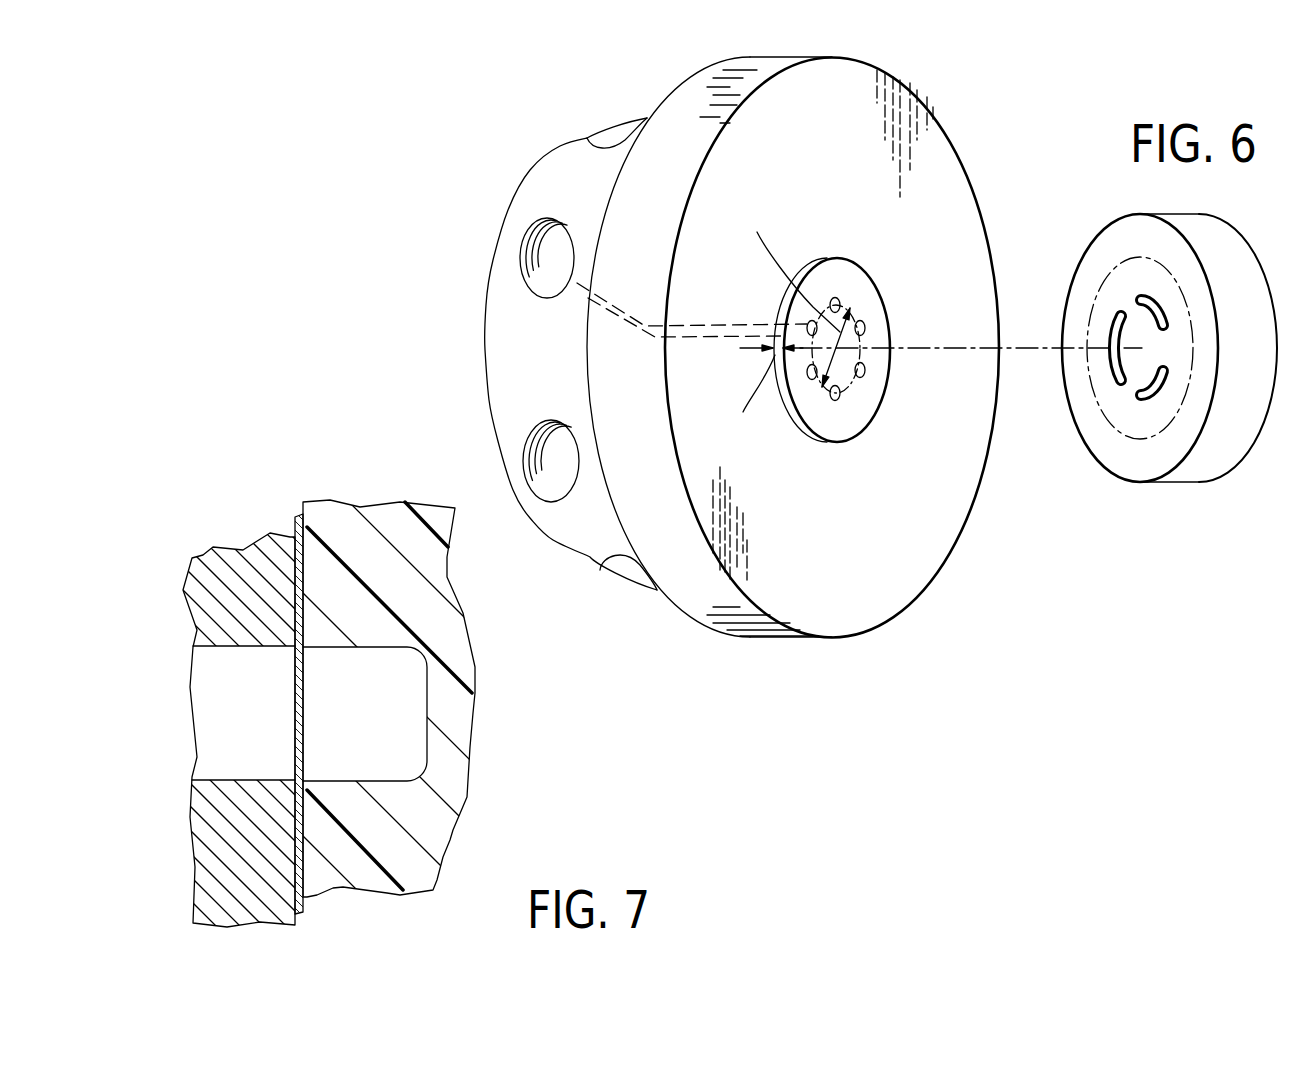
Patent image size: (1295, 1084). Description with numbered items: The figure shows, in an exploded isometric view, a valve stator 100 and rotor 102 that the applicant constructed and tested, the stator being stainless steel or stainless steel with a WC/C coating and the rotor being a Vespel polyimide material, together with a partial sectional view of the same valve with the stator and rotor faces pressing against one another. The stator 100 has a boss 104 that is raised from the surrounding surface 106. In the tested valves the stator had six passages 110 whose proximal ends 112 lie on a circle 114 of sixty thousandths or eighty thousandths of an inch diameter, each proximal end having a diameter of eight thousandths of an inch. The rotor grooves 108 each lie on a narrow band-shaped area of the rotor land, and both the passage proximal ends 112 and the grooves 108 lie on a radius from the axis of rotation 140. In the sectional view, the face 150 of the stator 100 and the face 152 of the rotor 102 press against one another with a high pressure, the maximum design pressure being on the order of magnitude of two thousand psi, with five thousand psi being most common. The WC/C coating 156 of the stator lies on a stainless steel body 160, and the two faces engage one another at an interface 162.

In FIG. 6, the stator 100 is at (746, 372).
In FIG. 7, the stator 100 is at (358, 704).
In FIG. 6, the rotor 102 is at (1202, 488).
In FIG. 7, the rotor 102 is at (383, 673).
In FIG. 6, the boss 104 is at (746, 347).
In FIG. 6, the surrounding surface 106 is at (930, 537).
In FIG. 7, the rotor grooves 108 is at (371, 778).
In FIG. 6, the passages 110 is at (687, 333).
In FIG. 6, the passage proximal ends 112 is at (838, 403).
In FIG. 7, the passage proximal ends 112 is at (214, 647).
In FIG. 6, the circle 114 is at (868, 340).
In FIG. 6, the axis of rotation 140 is at (1047, 347).
In FIG. 7, the stator face 150 is at (311, 904).
In FIG. 7, the rotor face 152 is at (296, 511).
In FIG. 7, the WC/C coating 156 is at (302, 792).
In FIG. 7, the stainless steel body 160 is at (205, 886).
In FIG. 7, the interface 162 is at (302, 830).